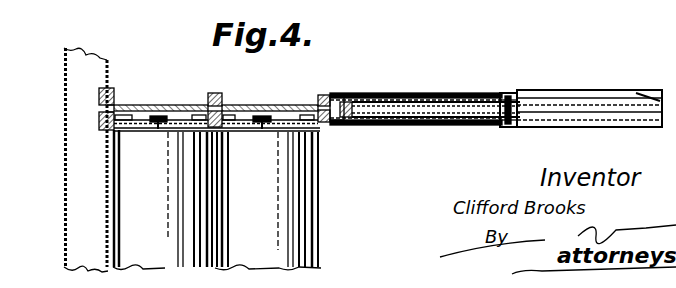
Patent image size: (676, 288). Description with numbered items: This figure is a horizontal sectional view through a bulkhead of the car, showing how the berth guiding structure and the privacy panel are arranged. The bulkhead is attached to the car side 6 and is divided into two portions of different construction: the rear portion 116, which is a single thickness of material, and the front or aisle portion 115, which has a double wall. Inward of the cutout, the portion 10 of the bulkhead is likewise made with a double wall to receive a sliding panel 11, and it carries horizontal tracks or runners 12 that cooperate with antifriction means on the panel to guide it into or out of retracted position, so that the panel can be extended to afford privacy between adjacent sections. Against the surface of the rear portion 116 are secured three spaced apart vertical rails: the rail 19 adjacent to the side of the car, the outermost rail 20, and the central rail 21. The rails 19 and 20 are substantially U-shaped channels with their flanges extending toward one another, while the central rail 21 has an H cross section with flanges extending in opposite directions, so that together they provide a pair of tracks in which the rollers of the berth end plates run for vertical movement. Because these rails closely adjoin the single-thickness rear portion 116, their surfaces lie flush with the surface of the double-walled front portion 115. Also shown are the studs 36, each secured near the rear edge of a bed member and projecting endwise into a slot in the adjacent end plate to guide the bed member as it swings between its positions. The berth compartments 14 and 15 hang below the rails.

The wall 6 is at (109, 63).
The vertical rail 19 is at (118, 94).
The rear portion of the bulkhead 116 is at (158, 104).
The central rail 21 is at (215, 89).
The outermost rail 20 is at (309, 96).
The portion of the bulkhead 10 is at (410, 127).
The front portion of the bulkhead 115 is at (390, 128).
The sliding panel 11 is at (513, 92).
The horizontal tracks or runners 12 is at (595, 107).
The stud 36 is at (158, 138).
The container 15 is at (156, 235).
The container 14 is at (265, 240).